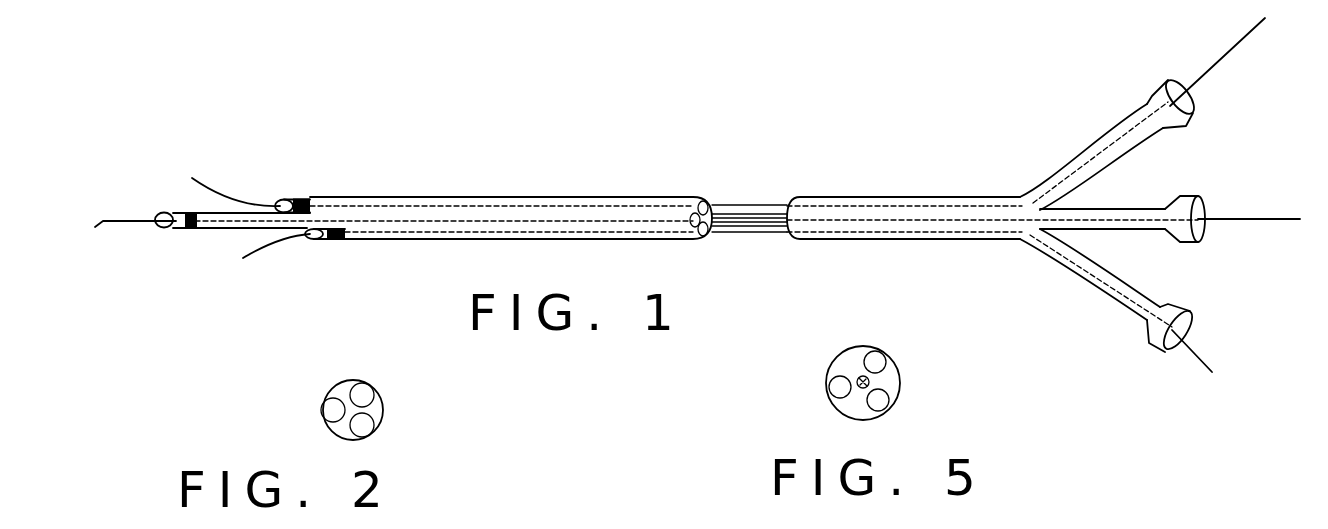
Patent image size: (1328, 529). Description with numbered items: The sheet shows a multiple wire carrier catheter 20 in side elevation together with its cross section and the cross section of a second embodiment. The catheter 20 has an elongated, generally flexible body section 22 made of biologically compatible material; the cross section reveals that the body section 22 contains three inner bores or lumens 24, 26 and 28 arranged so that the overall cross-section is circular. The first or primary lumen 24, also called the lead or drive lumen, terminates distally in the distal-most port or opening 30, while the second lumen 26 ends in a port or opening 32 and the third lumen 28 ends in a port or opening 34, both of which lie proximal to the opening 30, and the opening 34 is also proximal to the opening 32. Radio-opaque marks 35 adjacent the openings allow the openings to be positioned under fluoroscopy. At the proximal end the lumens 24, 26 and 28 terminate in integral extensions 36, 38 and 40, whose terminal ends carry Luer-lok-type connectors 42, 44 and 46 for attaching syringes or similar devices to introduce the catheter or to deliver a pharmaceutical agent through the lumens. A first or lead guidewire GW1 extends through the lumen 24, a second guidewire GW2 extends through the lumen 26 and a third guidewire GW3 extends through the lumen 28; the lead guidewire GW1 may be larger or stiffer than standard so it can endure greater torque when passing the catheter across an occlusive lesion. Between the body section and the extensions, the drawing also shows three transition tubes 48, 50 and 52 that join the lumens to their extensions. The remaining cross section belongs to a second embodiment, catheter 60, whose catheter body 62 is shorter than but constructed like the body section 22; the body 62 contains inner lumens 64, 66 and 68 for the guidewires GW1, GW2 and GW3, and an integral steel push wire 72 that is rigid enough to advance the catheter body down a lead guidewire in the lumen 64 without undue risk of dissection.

In FIG. 1, the carrier catheter 20 is at (897, 176).
In FIG. 2, the carrier catheter 20 is at (352, 368).
In FIG. 1, the body section 22 is at (950, 197).
In FIG. 2, the body section 22 is at (340, 392).
In FIG. 2, the first or primary lumen 24 is at (336, 410).
In FIG. 2, the second lumen 26 is at (362, 395).
In FIG. 2, the third lumen 28 is at (365, 433).
In FIG. 1, the port or opening 30 is at (167, 213).
In FIG. 1, the port or opening 32 is at (281, 200).
In FIG. 1, the port or opening 34 is at (310, 240).
In FIG. 1, the radio-opaque marks 35 is at (302, 198).
In FIG. 1, the extension 36 is at (1125, 209).
In FIG. 1, the extension 38 is at (1090, 160).
In FIG. 1, the extension 40 is at (1128, 302).
In FIG. 1, the Luer-lok-type connector 42 is at (1185, 196).
In FIG. 1, the Luer-lok-type connector 44 is at (1160, 98).
In FIG. 1, the Luer-lok-type connector 46 is at (1182, 317).
In FIG. 1, the first inner tube 48 is at (722, 206).
In FIG. 1, the second inner tube 50 is at (760, 206).
In FIG. 1, the third inner tube 52 is at (742, 233).
In FIG. 5, the catheter 60 is at (858, 328).
In FIG. 5, the catheter body 62 is at (848, 360).
In FIG. 5, the inner lumen 64 is at (842, 387).
In FIG. 5, the inner lumen 66 is at (877, 362).
In FIG. 5, the inner lumen 68 is at (880, 402).
In FIG. 5, the push wire 72 is at (867, 381).
In FIG. 1, the first or lead guidewire GW1 is at (103, 221).
In FIG. 1, the second guidewire GW2 is at (1265, 190).
In FIG. 1, the third guidewire GW3 is at (262, 252).